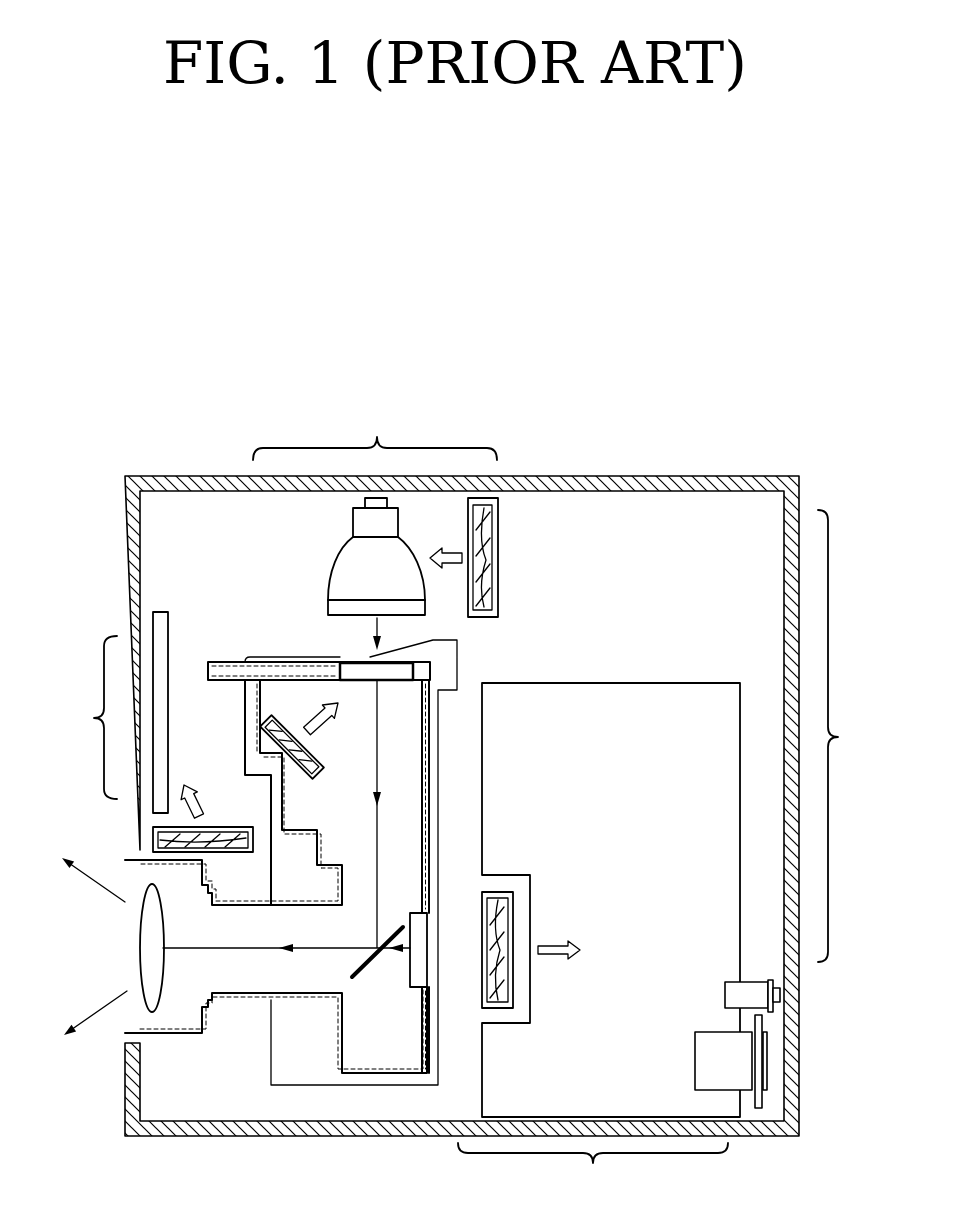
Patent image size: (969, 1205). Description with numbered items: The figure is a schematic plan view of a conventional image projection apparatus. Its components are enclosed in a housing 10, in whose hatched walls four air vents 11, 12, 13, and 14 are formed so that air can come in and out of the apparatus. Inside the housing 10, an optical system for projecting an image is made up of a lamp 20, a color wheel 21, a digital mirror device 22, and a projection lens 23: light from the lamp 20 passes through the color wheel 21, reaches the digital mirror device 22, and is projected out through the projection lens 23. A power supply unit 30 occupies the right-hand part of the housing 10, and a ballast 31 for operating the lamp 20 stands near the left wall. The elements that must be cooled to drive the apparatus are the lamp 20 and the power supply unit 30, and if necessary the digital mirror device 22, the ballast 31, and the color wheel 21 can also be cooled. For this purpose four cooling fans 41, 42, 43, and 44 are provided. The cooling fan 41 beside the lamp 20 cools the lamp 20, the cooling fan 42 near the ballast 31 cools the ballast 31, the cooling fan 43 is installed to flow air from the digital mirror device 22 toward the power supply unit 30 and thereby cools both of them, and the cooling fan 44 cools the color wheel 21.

The housing 10 is at (125, 1088).
The air vent 11 is at (593, 1171).
The air vent 12 is at (848, 736).
The air vent 13 is at (375, 433).
The air vent 14 is at (87, 717).
The lamp 20 is at (330, 562).
The color wheel 21 is at (345, 665).
The digital mirror device (DMD) 22 is at (415, 977).
The projection lens 23 is at (125, 963).
The power supply unit (PSU) 30 is at (545, 683).
The ballast 31 is at (170, 656).
The cooling fan 41 is at (498, 560).
The cooling fan 42 is at (231, 828).
The cooling fan 43 is at (512, 938).
The cooling fan 44 is at (266, 728).